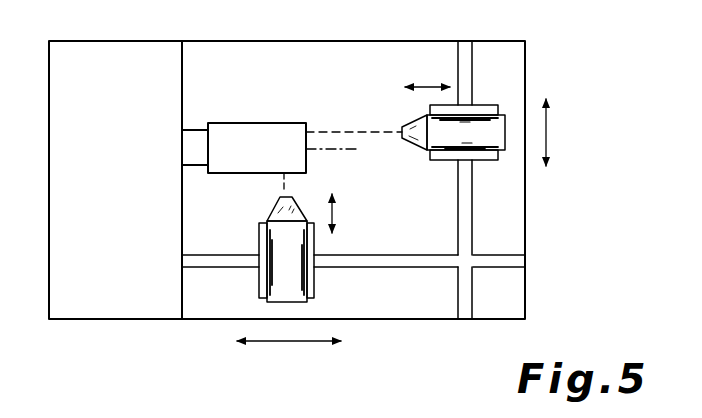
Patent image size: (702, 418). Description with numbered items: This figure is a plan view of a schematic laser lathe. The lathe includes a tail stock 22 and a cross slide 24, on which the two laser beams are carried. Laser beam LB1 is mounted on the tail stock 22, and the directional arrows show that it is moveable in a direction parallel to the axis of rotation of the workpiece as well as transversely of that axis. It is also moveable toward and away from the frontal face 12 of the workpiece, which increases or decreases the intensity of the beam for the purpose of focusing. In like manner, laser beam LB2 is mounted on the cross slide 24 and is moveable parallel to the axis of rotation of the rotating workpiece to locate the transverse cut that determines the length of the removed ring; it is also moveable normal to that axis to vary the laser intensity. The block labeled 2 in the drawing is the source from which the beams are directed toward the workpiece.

The laser light source 2 is at (260, 131).
The frontal face 12 is at (306, 158).
The laser beam LB1 is at (497, 120).
The laser beam LB2 is at (272, 272).
The tail stock 22 is at (493, 156).
The cross slide 24 is at (310, 288).